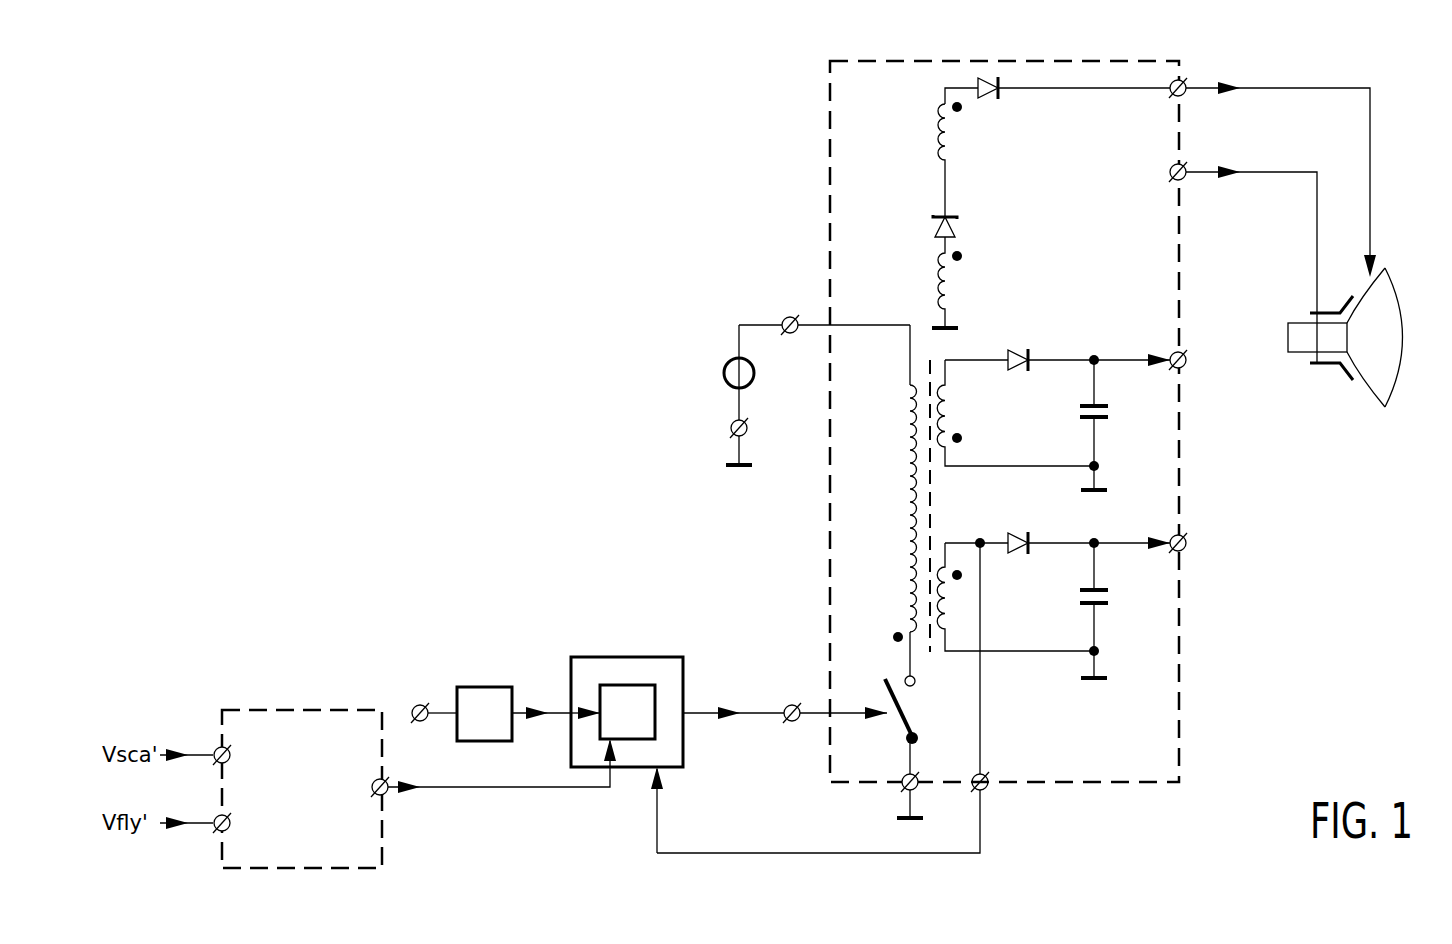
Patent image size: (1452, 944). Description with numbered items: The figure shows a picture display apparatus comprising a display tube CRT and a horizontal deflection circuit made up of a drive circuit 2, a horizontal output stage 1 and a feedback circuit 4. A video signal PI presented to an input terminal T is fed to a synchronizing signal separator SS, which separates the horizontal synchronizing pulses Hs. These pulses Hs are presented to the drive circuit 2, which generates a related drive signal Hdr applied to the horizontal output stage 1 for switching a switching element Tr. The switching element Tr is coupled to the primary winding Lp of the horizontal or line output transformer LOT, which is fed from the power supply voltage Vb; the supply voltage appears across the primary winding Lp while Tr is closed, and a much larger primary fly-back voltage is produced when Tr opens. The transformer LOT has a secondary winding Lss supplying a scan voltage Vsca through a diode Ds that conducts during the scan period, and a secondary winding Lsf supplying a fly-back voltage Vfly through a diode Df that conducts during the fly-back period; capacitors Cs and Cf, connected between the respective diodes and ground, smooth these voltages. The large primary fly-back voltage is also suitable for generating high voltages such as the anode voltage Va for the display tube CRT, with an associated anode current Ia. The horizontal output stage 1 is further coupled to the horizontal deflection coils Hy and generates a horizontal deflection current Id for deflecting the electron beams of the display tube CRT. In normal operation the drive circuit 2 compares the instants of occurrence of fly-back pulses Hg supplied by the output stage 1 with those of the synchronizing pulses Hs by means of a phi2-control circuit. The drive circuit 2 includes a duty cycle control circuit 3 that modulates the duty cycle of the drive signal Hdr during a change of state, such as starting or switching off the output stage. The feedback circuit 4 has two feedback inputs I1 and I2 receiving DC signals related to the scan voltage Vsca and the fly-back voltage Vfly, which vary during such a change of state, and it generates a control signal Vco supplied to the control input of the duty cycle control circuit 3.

The horizontal output stage 1 is at (828, 100).
The drive circuit 2 is at (594, 657).
The duty cycle control circuit 3 is at (628, 685).
The feedback circuit 4 is at (290, 708).
The switching element Tr is at (901, 711).
The primary winding Lp is at (910, 528).
The secondary winding Lss is at (952, 398).
The secondary winding Lsf is at (964, 583).
The horizontal output transformer LOT is at (893, 506).
The diode Ds is at (1012, 353).
The diode Df is at (1010, 538).
The capacitor Cs is at (1110, 409).
The capacitor Cf is at (1110, 597).
The display tube CRT is at (1396, 283).
The horizontal deflection coils Hy is at (1350, 381).
The power supply voltage Vb is at (724, 375).
The synchronizing signal separator SS is at (484, 714).
The video signal PI is at (434, 700).
The input terminal T is at (421, 723).
The feedback input I1 is at (216, 749).
The feedback input I2 is at (216, 817).
The anode voltage Va is at (1073, 192).
The anode current Ia is at (1281, 179).
The horizontal deflection current Id is at (1243, 262).
The scan voltage Vsca is at (1166, 348).
The fly-back voltage Vfly is at (1161, 532).
The horizontal synchronizing pulses Hs is at (541, 698).
The drive signal Hdr is at (785, 698).
The control signal Vco is at (493, 776).
The fly-back pulses Hg is at (820, 698).